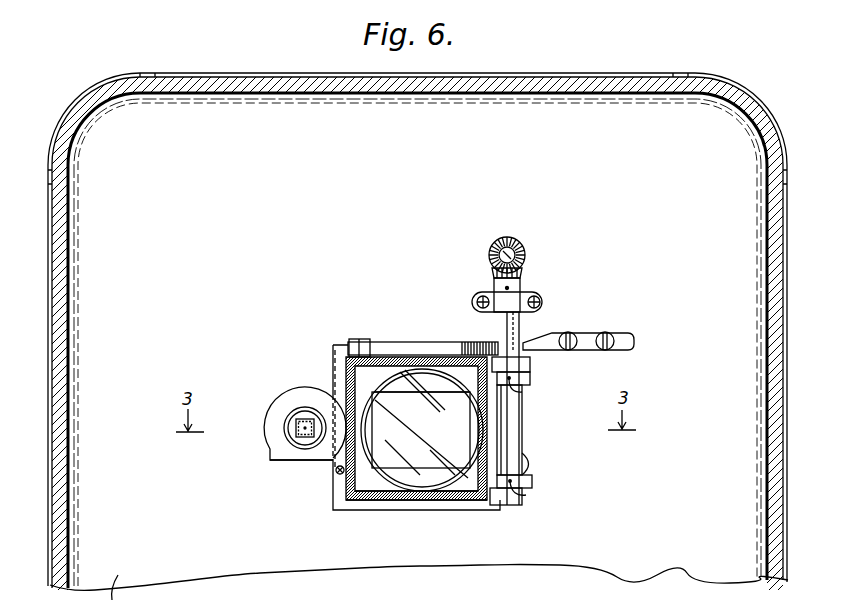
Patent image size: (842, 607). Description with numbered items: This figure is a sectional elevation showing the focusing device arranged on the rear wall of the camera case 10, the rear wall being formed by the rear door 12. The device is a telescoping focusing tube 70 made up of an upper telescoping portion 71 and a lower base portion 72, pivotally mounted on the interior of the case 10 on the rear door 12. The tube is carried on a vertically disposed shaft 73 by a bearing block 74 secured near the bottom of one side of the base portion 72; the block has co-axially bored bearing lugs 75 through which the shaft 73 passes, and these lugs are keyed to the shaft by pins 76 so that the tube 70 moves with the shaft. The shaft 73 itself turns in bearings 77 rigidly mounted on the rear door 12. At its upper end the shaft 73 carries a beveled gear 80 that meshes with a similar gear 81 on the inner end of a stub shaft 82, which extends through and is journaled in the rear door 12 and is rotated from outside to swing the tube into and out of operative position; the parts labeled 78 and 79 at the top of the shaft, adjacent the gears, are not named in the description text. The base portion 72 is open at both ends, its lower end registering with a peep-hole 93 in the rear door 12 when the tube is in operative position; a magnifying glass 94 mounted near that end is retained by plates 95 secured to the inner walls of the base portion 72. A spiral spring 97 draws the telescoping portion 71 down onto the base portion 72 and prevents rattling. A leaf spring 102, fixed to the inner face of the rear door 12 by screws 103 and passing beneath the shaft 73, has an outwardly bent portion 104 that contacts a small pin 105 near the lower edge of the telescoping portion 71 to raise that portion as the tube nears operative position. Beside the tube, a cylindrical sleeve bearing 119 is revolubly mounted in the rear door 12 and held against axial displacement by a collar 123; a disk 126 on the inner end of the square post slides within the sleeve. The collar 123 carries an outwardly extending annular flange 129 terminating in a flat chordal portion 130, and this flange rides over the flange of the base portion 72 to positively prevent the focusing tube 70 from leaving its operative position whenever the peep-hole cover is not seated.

The camera case 10 is at (725, 90).
The rear door 12 is at (417, 342).
The telescoping focusing tube 70 is at (415, 501).
The telescoping portion 71 is at (348, 499).
The base portion 72 is at (446, 501).
The shaft 73 is at (508, 431).
The bearing block 74 is at (490, 450).
The bearing lugs 75 is at (531, 378).
The pins 76 is at (525, 392).
The bearings 77 is at (526, 362).
The shaft bearing body 78 is at (522, 300).
The clamp plate 79 is at (472, 302).
The beveled gear 80 is at (522, 272).
The gear 81 is at (515, 241).
The stub shaft 82 is at (494, 243).
The peep-hole 93 is at (433, 470).
The magnifying glass 94 is at (422, 430).
The plates 95 is at (383, 488).
The spiral spring 97 is at (337, 471).
The leaf spring 102 is at (624, 338).
The screws 103 is at (582, 334).
The outwardly bent portion 104 is at (424, 350).
The pin 105 is at (359, 347).
The sleeve bearing 119 is at (285, 438).
The collar 123 is at (274, 410).
The disk 126 is at (305, 416).
The annular flange 129 is at (271, 428).
The chordal portion 130 is at (285, 462).